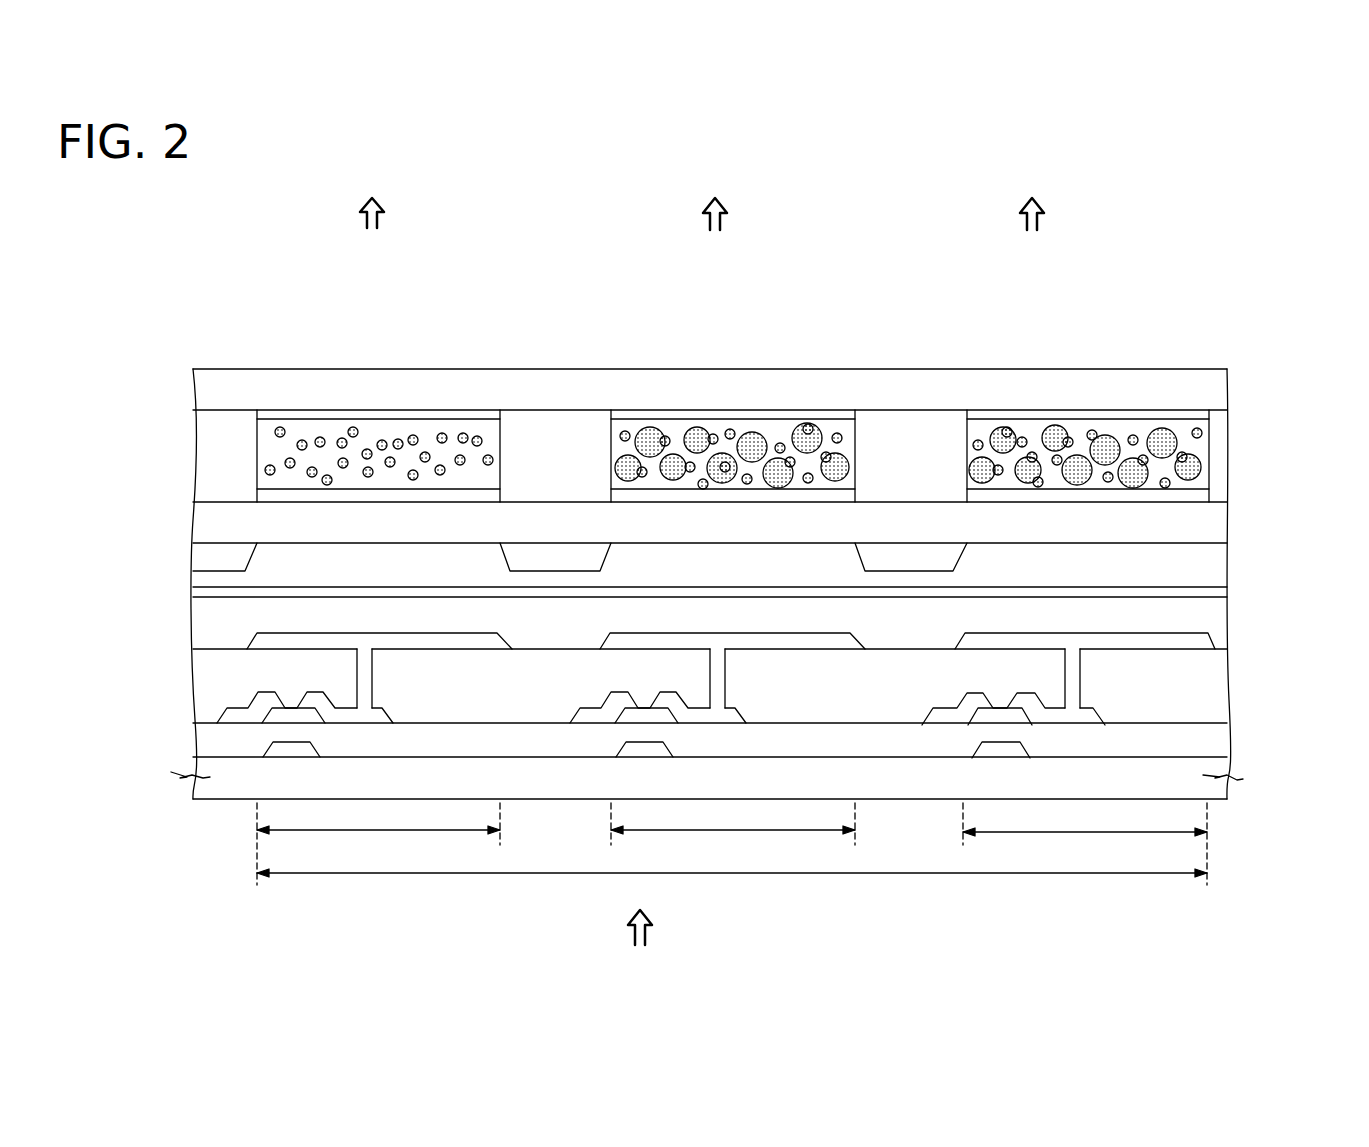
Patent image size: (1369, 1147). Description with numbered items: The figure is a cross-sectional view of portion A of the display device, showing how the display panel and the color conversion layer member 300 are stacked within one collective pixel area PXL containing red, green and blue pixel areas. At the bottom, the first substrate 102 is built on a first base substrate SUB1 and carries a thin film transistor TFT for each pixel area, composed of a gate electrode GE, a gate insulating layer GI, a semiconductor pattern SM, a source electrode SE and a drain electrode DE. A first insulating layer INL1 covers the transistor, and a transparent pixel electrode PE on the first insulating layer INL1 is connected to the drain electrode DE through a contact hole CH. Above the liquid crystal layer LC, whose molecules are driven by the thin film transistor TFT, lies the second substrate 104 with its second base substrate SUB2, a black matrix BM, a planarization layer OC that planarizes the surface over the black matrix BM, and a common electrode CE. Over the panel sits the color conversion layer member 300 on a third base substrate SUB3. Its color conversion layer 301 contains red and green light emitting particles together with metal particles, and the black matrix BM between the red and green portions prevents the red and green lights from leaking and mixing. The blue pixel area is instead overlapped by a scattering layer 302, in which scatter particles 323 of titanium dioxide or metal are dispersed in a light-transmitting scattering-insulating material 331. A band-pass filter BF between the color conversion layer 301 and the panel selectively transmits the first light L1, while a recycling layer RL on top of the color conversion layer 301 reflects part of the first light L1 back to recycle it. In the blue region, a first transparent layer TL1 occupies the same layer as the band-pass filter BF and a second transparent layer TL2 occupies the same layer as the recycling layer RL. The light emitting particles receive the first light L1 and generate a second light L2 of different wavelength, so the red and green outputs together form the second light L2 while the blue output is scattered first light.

The third base substrate SUB3 is at (212, 383).
The color conversion layer member 300 is at (105, 411).
The second transparent layer TL2 is at (247, 412).
The first transparent layer TL1 is at (247, 490).
The scattering layer 302 is at (455, 294).
The scatter particles 323 is at (320, 437).
The scattering-insulating material 331 is at (398, 439).
The black matrix BM is at (542, 440).
The recycling layer RL is at (630, 417).
The color conversion layer 301 is at (1130, 260).
The second base substrate SUB2 is at (210, 518).
The second substrate 104 is at (105, 514).
The planarization layer OC is at (197, 578).
The common electrode CE is at (195, 590).
The liquid crystal layer LC is at (195, 617).
The pixel electrode PE is at (1203, 638).
The contact hole CH is at (1083, 678).
The first insulating layer INL1 is at (210, 686).
The semiconductor pattern SM is at (1005, 715).
The source electrode SE is at (945, 715).
The drain electrode DE is at (1055, 715).
The gate insulating layer GI is at (197, 736).
The gate electrode GE is at (992, 748).
The thin film transistor TFT is at (930, 909).
The first base substrate SUB1 is at (200, 786).
The first substrate 102 is at (105, 680).
The band-pass filter BF is at (1318, 493).
The pixel area PXL is at (732, 883).
The first light L1 is at (640, 943).
The second light L2 is at (1050, 170).
The portion A is at (1252, 200).